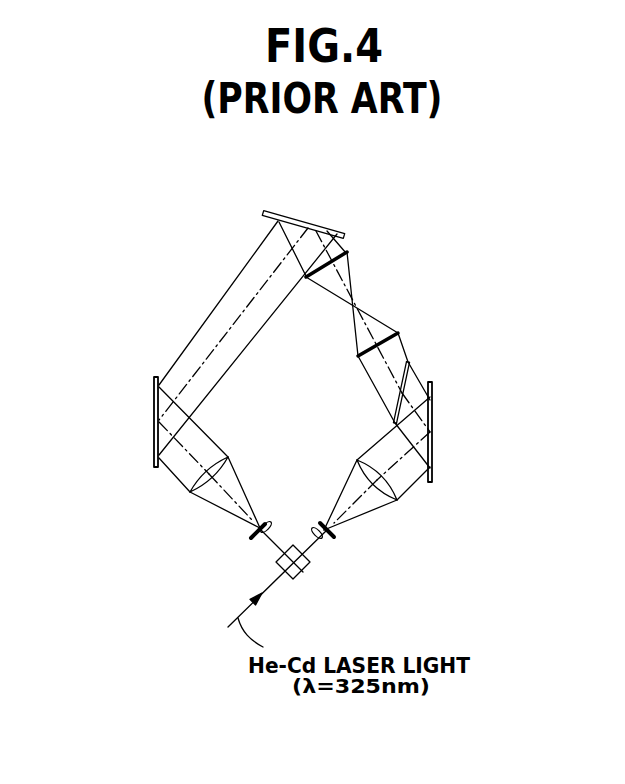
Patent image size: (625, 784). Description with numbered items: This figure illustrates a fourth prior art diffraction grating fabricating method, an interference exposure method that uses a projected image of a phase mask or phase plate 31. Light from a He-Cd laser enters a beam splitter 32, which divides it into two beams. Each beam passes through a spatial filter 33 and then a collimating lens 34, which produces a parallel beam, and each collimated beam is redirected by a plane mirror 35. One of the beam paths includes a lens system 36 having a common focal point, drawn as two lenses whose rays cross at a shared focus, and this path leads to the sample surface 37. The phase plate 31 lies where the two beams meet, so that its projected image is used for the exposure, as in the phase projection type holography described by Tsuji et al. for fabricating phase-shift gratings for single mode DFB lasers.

The phase plate 31 is at (409, 362).
The beam splitter 32 is at (310, 567).
The spatial filter 33 is at (254, 536).
The collimating lens 34 is at (357, 461).
The plane mirror 35 is at (433, 413).
The lens system having a common focal point 36 is at (348, 254).
The sample surface 37 is at (341, 232).